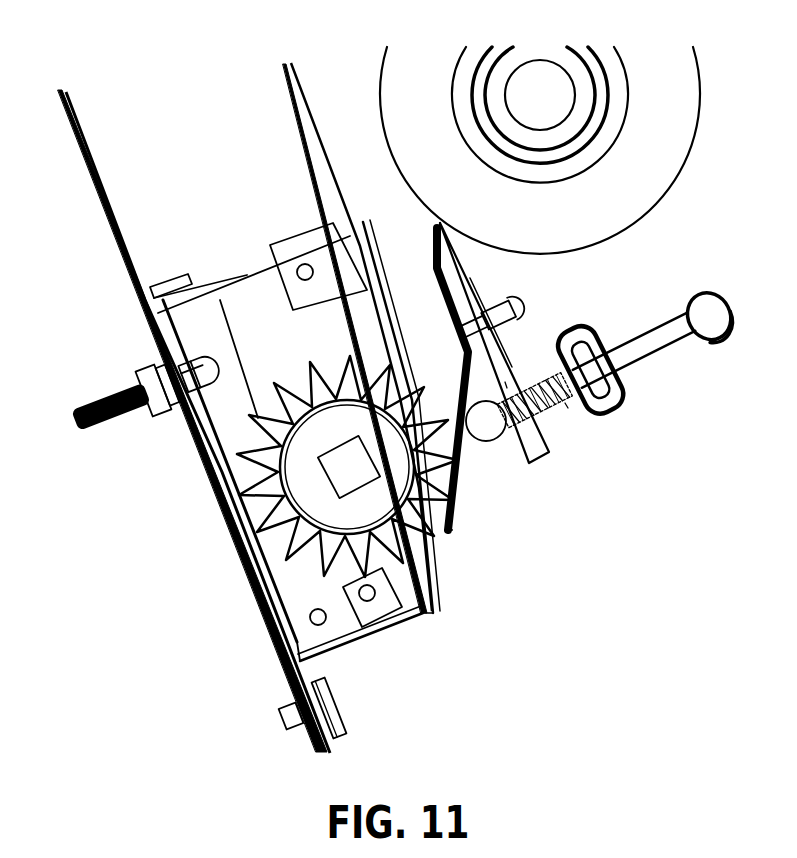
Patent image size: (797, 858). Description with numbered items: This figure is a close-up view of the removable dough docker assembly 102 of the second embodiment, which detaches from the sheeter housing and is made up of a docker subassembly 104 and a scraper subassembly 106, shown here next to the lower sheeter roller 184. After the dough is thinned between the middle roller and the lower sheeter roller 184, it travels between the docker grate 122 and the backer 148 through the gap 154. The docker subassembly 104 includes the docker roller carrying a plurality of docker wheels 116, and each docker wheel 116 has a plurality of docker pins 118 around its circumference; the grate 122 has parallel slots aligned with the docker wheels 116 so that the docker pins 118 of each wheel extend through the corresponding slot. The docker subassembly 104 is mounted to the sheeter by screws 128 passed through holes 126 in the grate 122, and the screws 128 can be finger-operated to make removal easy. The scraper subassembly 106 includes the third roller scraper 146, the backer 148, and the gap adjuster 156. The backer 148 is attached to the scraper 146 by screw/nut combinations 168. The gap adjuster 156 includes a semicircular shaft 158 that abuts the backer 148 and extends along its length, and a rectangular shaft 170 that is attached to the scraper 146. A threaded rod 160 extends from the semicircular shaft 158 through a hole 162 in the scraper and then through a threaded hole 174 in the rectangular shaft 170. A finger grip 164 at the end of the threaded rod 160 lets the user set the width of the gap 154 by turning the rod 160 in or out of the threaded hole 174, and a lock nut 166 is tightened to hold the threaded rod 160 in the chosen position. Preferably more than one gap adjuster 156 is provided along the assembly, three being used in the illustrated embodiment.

The assembly 102 is at (470, 569).
The docker subassembly 104 is at (243, 272).
The scraper subassembly 106 is at (546, 468).
The docker wheel 116 is at (301, 484).
The docker pin 118 is at (290, 562).
The grate 122 is at (296, 106).
The hole 126 is at (314, 726).
The screw 128 is at (344, 703).
The third roller scraper 146 is at (458, 262).
The backer 148 is at (457, 516).
The gap 154 is at (447, 367).
The gap adjuster 156 is at (616, 461).
The semicircular shaft 158 is at (494, 445).
The threaded rod 160 is at (634, 350).
The hole 162 is at (512, 382).
The finger grip 164 is at (710, 317).
The lock nut 166 is at (591, 370).
The screw/nut combination 168 is at (519, 301).
The rectangular shaft 170 is at (534, 400).
The threaded hole 174 is at (570, 410).
The lower sheeter roller 184 is at (698, 128).